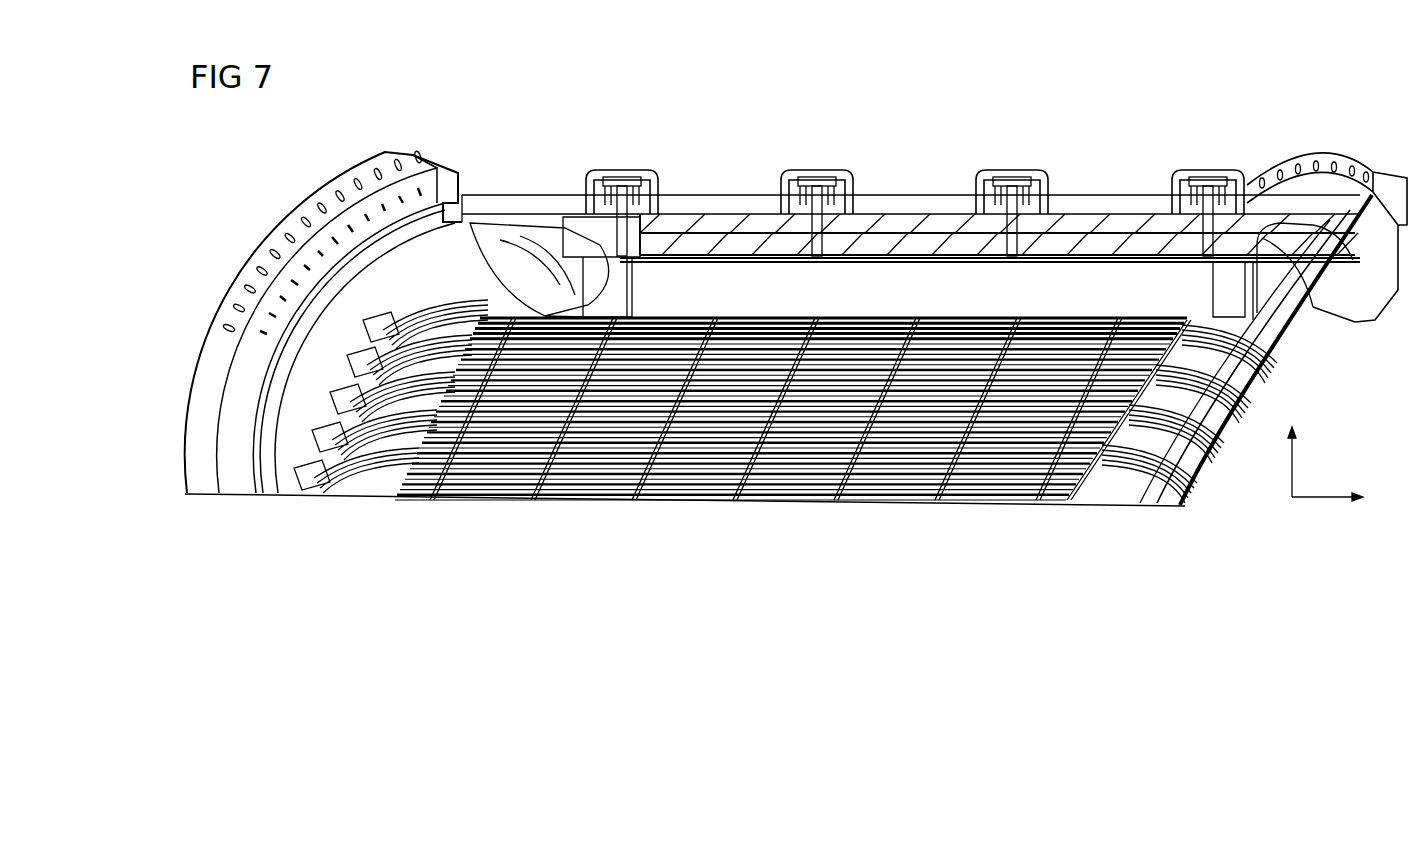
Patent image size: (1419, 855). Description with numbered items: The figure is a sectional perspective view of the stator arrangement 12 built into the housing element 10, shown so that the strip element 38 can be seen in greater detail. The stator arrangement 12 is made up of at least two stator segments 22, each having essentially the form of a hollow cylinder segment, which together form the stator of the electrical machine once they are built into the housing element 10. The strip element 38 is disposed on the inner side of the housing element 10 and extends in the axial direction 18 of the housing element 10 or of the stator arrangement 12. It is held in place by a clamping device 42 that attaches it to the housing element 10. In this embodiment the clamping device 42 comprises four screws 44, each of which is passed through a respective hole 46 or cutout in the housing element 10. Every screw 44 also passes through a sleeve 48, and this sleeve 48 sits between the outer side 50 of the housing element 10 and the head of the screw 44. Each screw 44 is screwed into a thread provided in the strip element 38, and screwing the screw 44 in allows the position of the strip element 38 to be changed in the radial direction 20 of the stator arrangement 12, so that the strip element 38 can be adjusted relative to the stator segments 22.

The housing element 10 is at (1396, 180).
The stator arrangement 12 is at (447, 133).
The axial direction 18 is at (1320, 500).
The radial direction 20 is at (1290, 470).
The stator segment 22 is at (1180, 413).
The strip element 38 is at (1080, 240).
The clamping device 42 is at (823, 139).
The screw 44 is at (797, 172).
The hole 46 is at (813, 198).
The sleeve 48 is at (843, 193).
The outer side 50 is at (1150, 210).